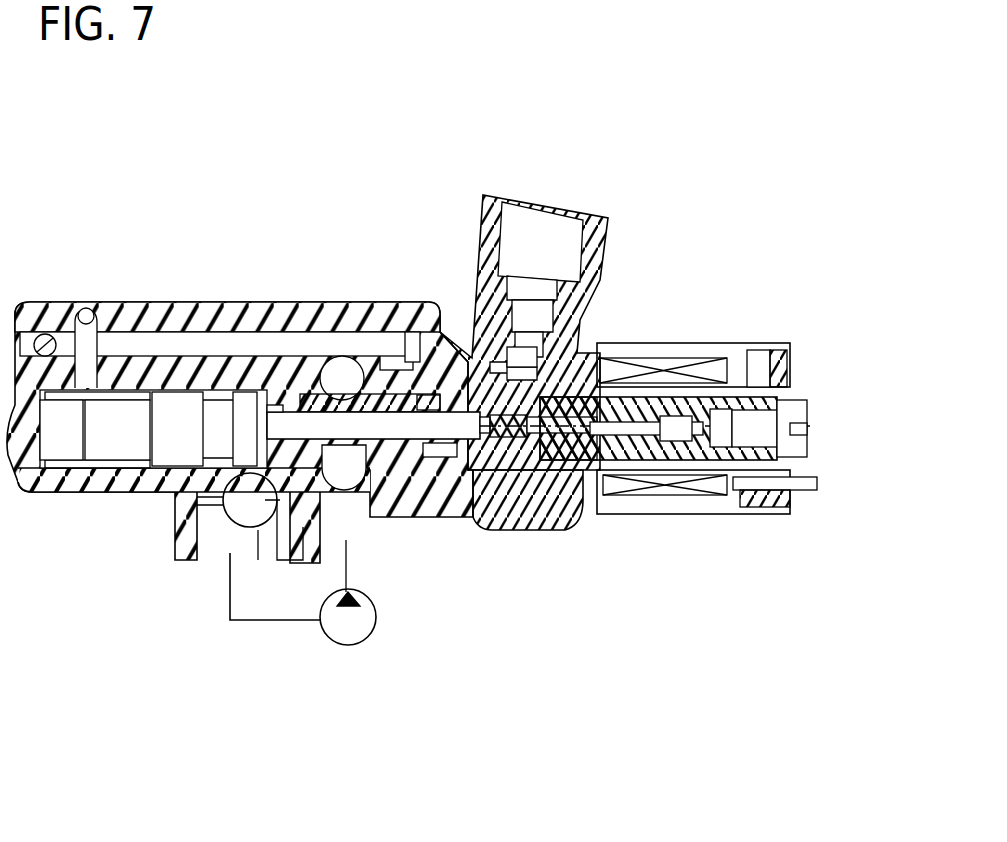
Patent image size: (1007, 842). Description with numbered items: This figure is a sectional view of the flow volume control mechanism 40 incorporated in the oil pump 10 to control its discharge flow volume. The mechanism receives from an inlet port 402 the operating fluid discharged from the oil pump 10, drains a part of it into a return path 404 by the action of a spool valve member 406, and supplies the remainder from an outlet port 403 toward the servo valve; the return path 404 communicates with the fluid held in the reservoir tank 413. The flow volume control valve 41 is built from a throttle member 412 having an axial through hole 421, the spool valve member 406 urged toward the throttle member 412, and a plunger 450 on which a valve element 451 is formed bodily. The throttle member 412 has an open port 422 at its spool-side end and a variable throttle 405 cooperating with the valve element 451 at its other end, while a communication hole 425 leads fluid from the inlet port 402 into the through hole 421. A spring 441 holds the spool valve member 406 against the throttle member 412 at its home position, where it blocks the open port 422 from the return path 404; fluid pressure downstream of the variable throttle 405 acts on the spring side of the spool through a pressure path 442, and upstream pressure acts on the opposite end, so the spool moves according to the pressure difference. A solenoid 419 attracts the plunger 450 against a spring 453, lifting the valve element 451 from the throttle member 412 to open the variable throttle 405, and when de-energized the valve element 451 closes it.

The oil pump 10 is at (348, 647).
The flow volume control mechanism 40 is at (662, 232).
The flow volume control valve 41 is at (695, 500).
The inlet port 402 is at (360, 537).
The outlet port 403 is at (543, 243).
The return path 404 is at (210, 523).
The variable throttle 405 is at (583, 352).
The spool valve member 406 is at (172, 415).
The throttle member 412 is at (330, 376).
The reservoir tank 413 is at (295, 565).
The solenoid 419 is at (638, 500).
The through hole 421 is at (387, 430).
The open port 422 is at (290, 470).
The communication hole 425 is at (262, 400).
The spring 441 is at (110, 487).
The pressure path 442 is at (128, 348).
The plunger 450 is at (612, 398).
The valve element 451 is at (515, 450).
The spring 453 is at (790, 387).